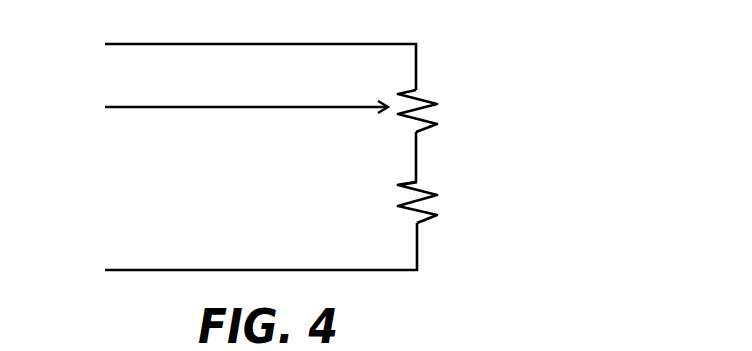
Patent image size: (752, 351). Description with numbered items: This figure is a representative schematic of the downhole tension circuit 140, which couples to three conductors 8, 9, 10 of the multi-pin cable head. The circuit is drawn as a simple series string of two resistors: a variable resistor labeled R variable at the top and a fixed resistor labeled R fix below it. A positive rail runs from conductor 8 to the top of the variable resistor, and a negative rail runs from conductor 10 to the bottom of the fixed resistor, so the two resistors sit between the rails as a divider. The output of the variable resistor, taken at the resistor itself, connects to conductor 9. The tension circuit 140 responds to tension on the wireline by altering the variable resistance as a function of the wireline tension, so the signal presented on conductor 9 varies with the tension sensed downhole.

The conductor 8 is at (236, 51).
The conductor 9 is at (222, 102).
The conductor 10 is at (236, 257).
The tension circuit 140 is at (472, 72).